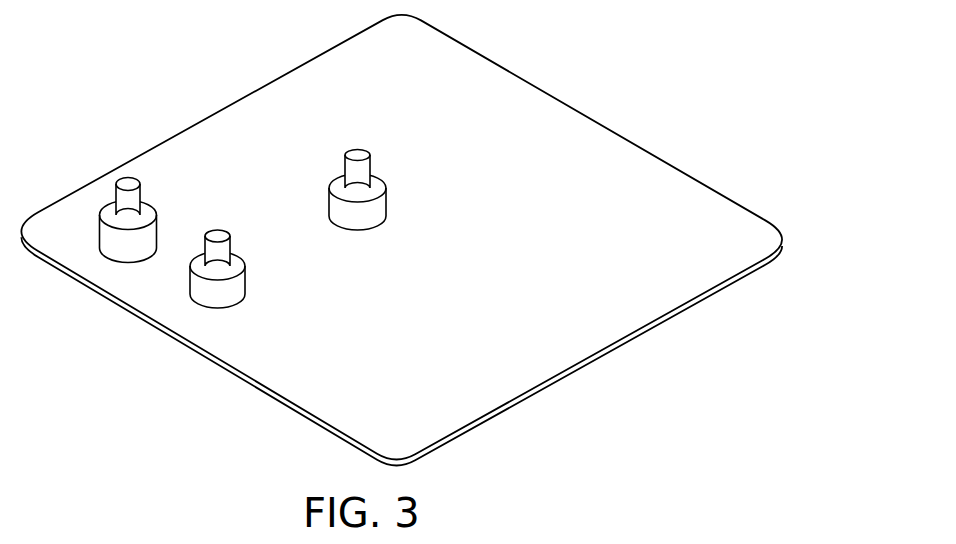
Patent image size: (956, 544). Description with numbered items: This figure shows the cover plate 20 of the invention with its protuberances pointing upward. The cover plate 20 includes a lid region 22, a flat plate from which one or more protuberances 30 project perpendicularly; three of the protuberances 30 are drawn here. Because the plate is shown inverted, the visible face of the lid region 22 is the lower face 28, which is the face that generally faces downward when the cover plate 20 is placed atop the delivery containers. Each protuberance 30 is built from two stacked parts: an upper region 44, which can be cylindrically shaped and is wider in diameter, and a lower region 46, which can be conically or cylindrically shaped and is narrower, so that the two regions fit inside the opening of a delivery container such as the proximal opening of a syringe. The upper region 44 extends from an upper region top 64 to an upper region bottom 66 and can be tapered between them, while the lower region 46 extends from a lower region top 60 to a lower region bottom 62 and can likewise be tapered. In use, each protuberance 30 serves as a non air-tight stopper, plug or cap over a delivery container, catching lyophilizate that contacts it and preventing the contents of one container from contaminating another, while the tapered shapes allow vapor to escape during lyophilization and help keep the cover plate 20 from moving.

The cover plate 20 is at (401, 233).
The lid region 22 is at (578, 368).
The lower face 28 is at (697, 189).
The protuberance 30 is at (100, 172).
The upper region 44 is at (383, 170).
The lower region 46 is at (357, 150).
The lower region top 60 is at (216, 267).
The lower region bottom 62 is at (220, 230).
The upper region top 64 is at (240, 287).
The upper region bottom 66 is at (240, 263).